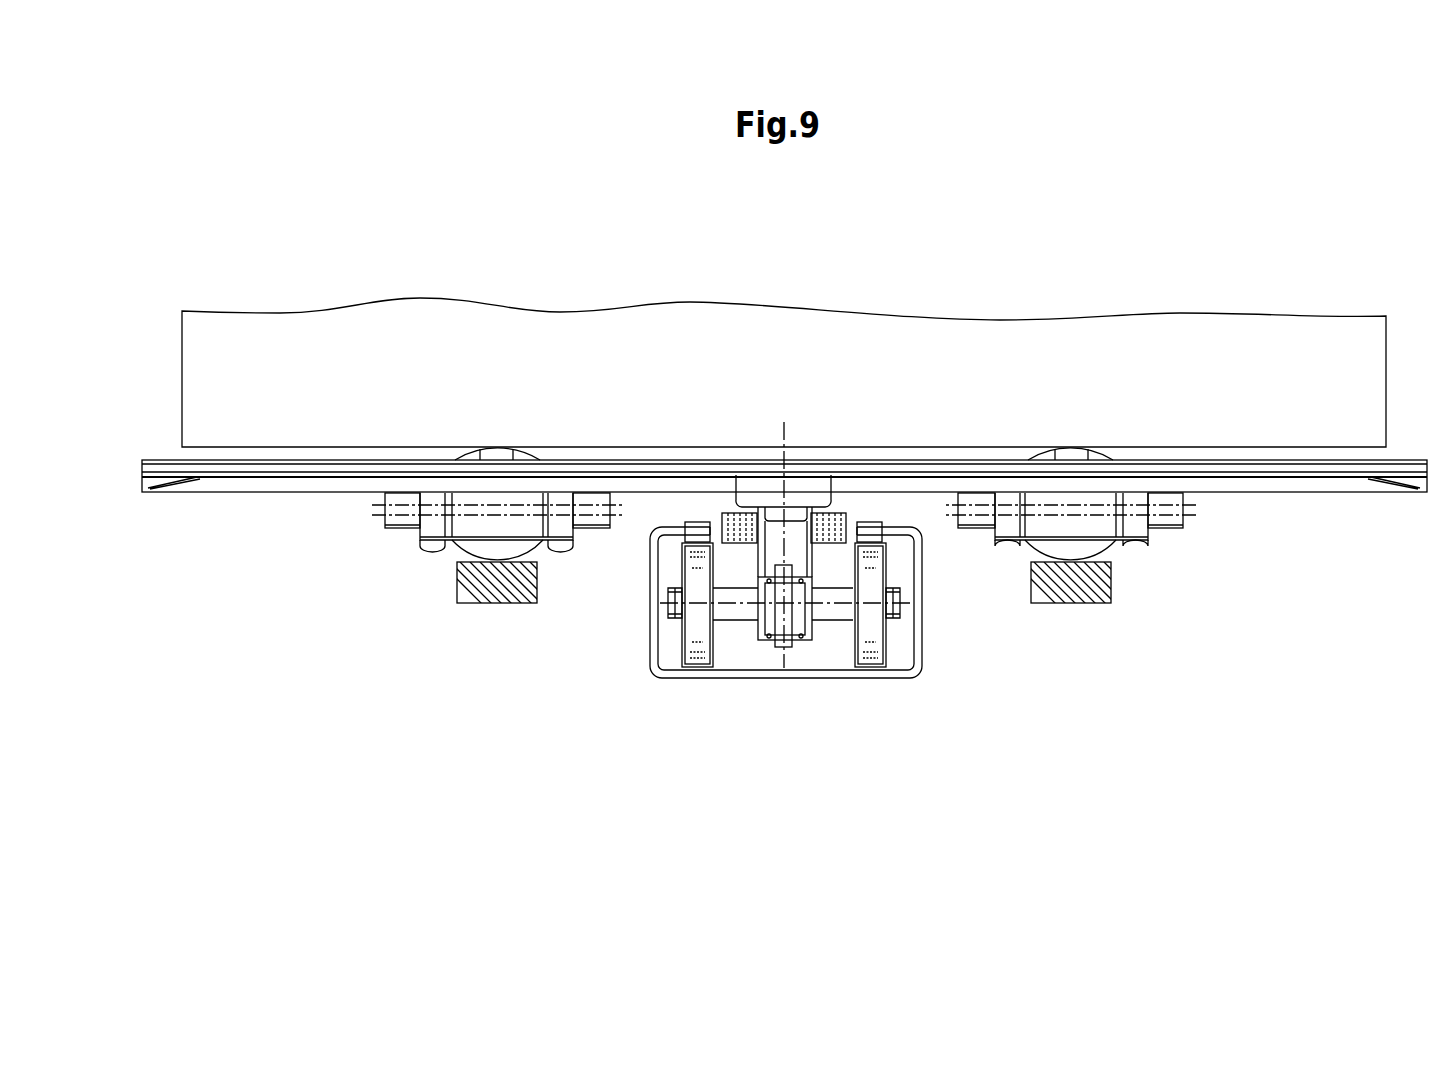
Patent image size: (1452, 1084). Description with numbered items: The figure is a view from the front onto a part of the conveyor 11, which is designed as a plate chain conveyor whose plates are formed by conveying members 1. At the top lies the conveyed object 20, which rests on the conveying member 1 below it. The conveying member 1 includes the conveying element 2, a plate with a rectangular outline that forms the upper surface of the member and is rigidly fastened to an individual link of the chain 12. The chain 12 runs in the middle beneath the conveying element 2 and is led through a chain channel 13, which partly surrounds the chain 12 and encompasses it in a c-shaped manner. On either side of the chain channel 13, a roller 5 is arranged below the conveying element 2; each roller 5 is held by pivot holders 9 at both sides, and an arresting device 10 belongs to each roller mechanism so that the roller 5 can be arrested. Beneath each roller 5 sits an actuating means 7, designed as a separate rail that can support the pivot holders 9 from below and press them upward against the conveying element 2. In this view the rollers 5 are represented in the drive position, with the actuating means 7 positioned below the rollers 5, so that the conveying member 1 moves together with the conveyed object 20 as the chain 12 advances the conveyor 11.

The conveying member 1 is at (1363, 523).
The conveying element 2 is at (218, 471).
The roller 5 is at (477, 528).
The actuating means 7 is at (482, 592).
The pivot holder 9 is at (397, 520).
The arresting device 10 is at (428, 540).
The conveyor 11 is at (1282, 608).
The chain 12 is at (710, 688).
The chain channel 13 is at (913, 665).
The conveyed object 20 is at (768, 398).